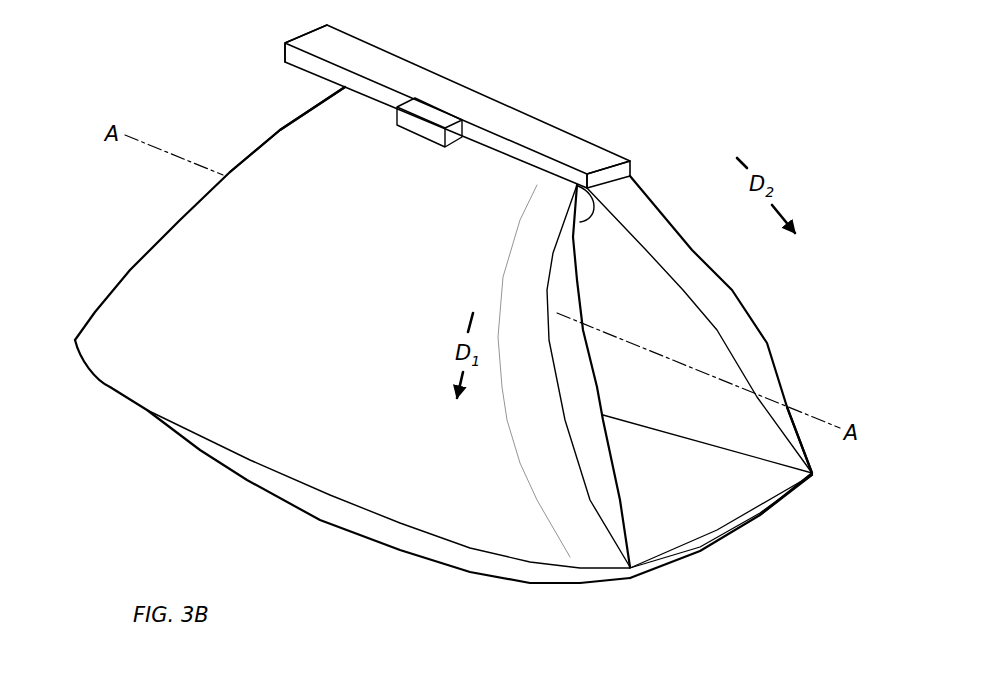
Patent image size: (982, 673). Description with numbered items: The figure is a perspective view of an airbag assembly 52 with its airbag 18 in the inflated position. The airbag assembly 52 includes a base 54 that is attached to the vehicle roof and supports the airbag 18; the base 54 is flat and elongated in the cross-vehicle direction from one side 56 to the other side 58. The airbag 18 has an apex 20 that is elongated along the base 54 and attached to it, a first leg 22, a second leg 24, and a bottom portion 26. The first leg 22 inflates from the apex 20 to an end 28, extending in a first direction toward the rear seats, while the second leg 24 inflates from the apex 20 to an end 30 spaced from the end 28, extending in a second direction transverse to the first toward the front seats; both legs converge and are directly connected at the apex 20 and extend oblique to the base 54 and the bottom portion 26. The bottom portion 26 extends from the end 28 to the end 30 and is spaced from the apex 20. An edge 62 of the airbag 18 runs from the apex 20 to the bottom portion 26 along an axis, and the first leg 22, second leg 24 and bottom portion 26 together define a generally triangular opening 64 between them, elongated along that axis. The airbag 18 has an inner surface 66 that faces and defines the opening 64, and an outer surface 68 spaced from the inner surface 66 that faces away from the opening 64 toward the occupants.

The airbag assembly 52 is at (191, 58).
The base 54 is at (561, 111).
The one side of the base 56 is at (632, 161).
The other side of the base 58 is at (307, 33).
The airbag 18 is at (663, 198).
The apex 20 is at (572, 232).
The first leg 22 is at (158, 238).
The second leg 24 is at (765, 345).
The bottom portion 26 is at (673, 571).
The end of the first leg 28 is at (630, 580).
The end of the second leg 30 is at (820, 479).
The edge 62 is at (257, 144).
The opening 64 is at (666, 453).
The inner surface 66 is at (584, 258).
The outer surface 68 is at (259, 326).